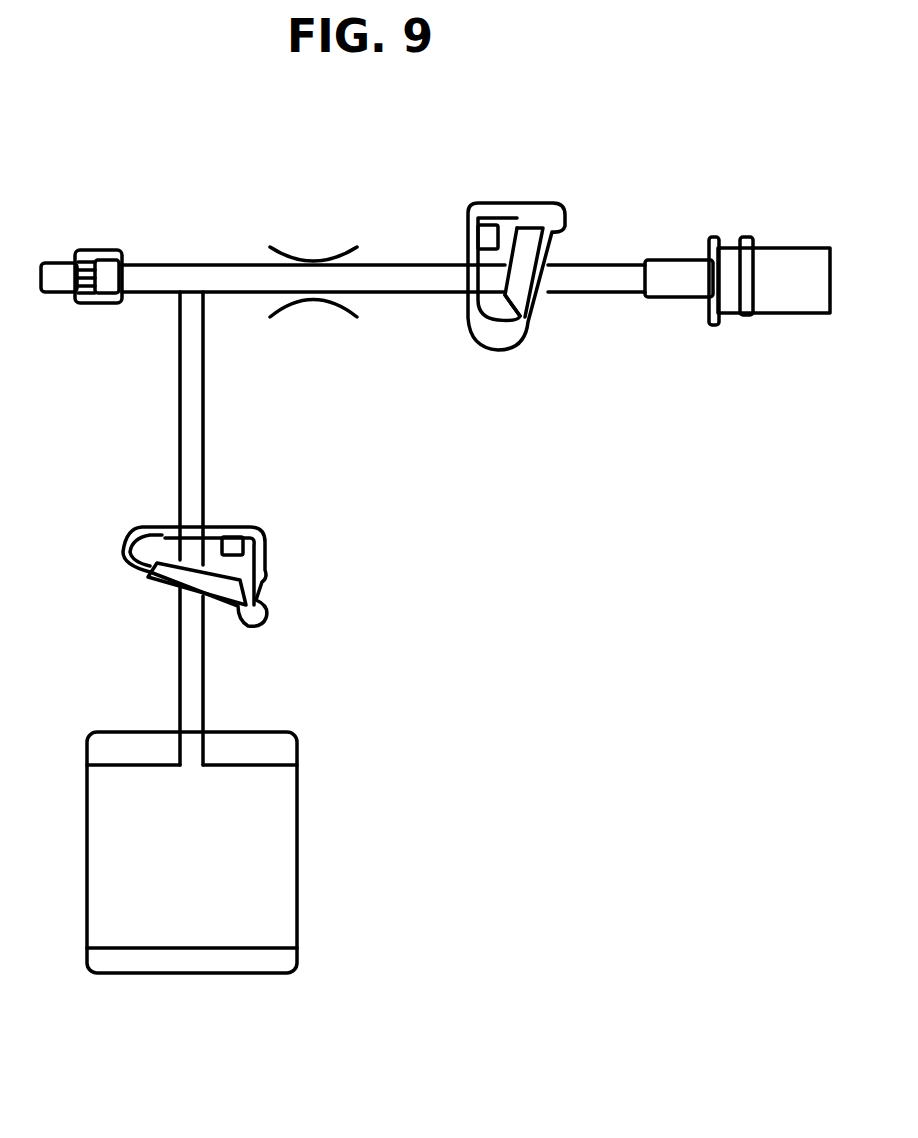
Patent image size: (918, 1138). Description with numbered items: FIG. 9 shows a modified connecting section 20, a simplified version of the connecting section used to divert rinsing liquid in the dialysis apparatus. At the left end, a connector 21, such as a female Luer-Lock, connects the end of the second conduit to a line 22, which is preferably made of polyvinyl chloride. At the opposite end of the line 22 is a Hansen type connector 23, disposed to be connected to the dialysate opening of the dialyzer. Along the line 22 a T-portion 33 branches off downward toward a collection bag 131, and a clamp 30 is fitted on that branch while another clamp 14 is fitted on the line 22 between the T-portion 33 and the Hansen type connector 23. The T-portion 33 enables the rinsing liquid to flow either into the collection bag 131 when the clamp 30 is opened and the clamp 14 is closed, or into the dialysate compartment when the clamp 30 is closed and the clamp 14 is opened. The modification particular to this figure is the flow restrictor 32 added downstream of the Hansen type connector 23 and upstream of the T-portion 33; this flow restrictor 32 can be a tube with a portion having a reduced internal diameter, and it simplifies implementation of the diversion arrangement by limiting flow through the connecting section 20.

The clamp 14 is at (520, 200).
The connecting section 20 is at (565, 400).
The connector 21 is at (80, 248).
The line 22 is at (425, 270).
The Hansen type connector 23 is at (765, 252).
The clamp 30 is at (268, 578).
The flow restrictor 32 is at (320, 253).
The T-portion 33 is at (203, 265).
The bag 131 is at (285, 840).